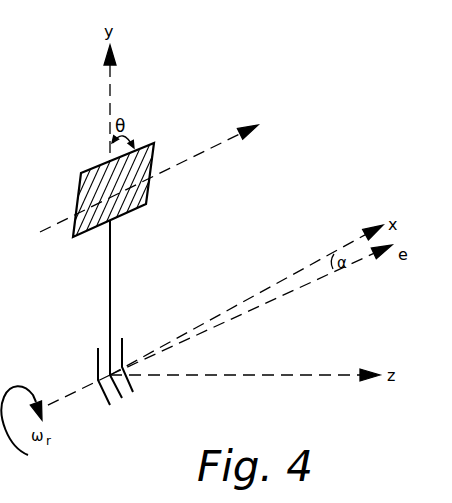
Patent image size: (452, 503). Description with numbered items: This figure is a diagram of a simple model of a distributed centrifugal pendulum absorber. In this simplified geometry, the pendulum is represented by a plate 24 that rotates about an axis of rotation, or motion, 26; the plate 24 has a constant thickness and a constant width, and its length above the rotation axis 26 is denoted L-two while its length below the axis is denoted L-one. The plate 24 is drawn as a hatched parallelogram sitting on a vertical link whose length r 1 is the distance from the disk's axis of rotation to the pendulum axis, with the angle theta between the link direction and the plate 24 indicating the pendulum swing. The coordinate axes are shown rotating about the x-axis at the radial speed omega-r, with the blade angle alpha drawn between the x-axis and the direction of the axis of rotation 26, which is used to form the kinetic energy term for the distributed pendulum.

The plate 24 is at (150, 188).
The axis of rotation 26 is at (207, 152).
The radius r1 support stem 1 is at (127, 297).